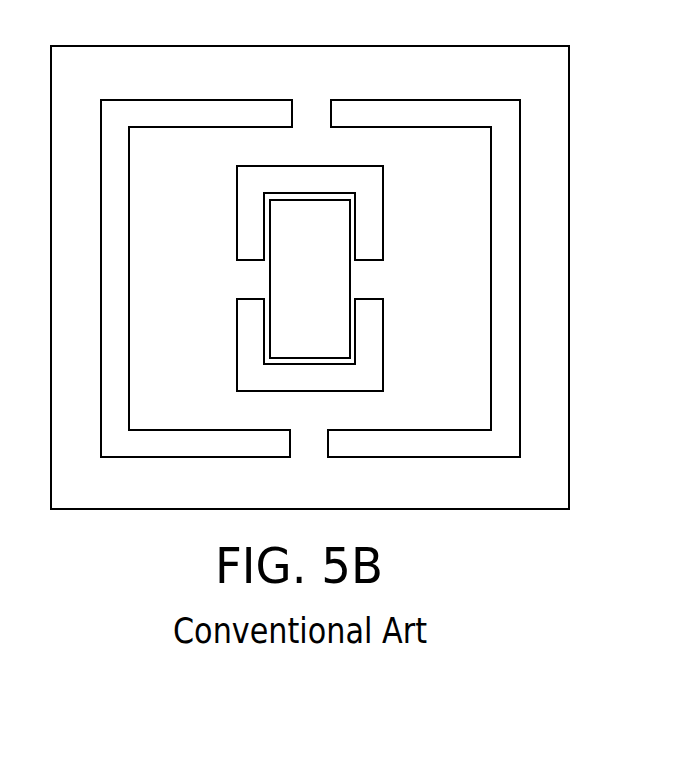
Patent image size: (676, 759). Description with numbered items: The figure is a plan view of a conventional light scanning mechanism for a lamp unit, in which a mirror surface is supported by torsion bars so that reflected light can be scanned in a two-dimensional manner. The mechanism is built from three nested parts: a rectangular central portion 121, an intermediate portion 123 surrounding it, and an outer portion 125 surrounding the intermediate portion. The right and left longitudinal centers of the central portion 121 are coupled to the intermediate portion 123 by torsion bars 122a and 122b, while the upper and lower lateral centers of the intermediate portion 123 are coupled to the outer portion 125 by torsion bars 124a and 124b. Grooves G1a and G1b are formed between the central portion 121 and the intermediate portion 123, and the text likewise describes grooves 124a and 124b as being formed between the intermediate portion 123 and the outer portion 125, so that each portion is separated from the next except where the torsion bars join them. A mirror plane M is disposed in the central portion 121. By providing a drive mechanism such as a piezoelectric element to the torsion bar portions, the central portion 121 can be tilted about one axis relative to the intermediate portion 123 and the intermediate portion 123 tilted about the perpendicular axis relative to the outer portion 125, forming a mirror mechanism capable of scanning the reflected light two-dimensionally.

The outer portion 125 is at (200, 84).
The intermediate portion 123 is at (200, 200).
The torsion bar 124a is at (333, 113).
The torsion bar 124b is at (330, 443).
The rectangular central portion 121 is at (357, 235).
The torsion bar 122a is at (253, 302).
The torsion bar 122b is at (367, 302).
The groove G1a is at (362, 190).
The groove G1b is at (362, 372).
The mirror plane M is at (332, 282).